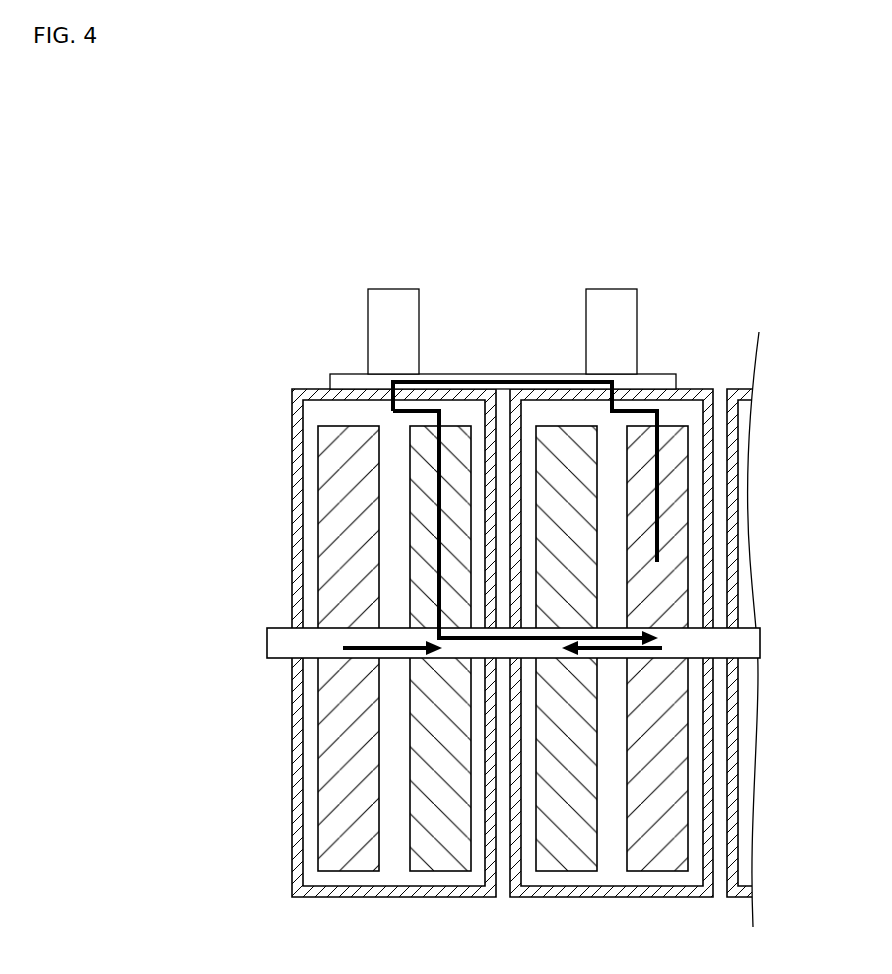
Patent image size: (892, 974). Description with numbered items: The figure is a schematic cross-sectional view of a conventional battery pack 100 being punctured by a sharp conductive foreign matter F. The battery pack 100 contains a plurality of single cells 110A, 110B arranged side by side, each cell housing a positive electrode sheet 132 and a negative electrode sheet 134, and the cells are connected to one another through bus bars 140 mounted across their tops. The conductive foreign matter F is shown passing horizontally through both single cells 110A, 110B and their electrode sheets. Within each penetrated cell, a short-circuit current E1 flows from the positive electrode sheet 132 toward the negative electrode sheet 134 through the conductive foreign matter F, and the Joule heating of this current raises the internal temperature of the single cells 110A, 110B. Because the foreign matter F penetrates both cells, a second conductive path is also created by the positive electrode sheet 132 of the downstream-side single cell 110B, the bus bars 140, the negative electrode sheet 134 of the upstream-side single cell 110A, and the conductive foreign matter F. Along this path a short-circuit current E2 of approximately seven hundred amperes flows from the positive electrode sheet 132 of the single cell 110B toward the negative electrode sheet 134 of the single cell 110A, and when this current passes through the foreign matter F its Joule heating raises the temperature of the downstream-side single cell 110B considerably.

The battery pack 100 is at (292, 220).
The single cell 110A is at (291, 745).
The single cell 110B is at (714, 757).
The positive electrode sheet 132 is at (352, 872).
The negative electrode sheet 134 is at (444, 872).
The bus bar 140 is at (660, 374).
The conductive foreign matter F is at (267, 646).
The short-circuit current E1 is at (393, 648).
The short-circuit current E2 is at (500, 374).